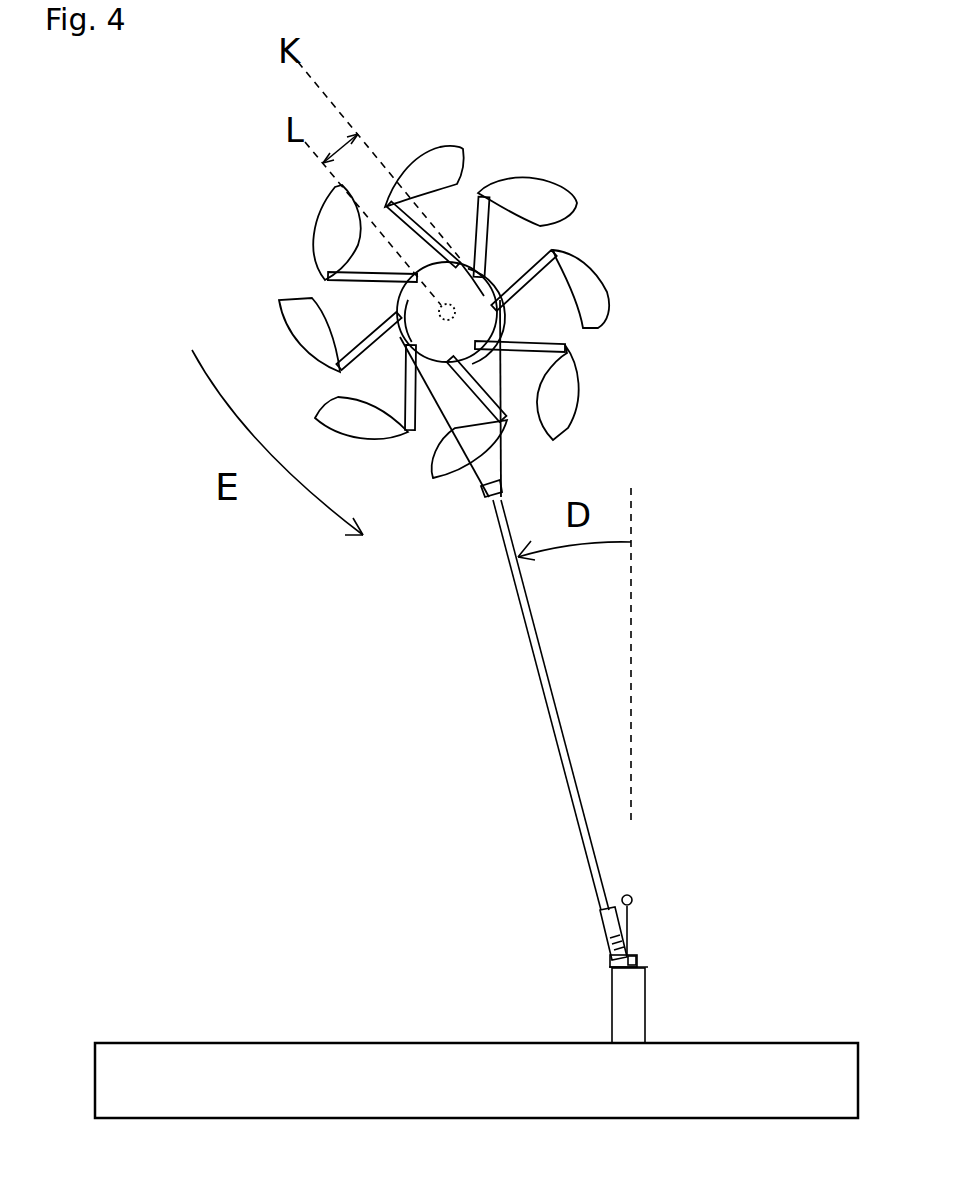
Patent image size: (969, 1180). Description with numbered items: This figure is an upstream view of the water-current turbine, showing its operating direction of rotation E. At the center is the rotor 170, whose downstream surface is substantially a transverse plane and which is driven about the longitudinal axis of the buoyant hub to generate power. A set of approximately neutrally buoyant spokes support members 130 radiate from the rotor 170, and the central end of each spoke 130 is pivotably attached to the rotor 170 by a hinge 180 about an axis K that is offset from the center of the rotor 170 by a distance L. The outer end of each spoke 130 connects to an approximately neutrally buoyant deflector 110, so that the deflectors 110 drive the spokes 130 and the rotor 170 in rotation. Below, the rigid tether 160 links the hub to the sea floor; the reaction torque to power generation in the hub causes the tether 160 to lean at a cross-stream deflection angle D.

The deflector 110 is at (273, 308).
The spoke support member 130 is at (365, 325).
The rigid tether 160 is at (548, 717).
The rotor 170 is at (507, 270).
The hinge 180 is at (472, 278).